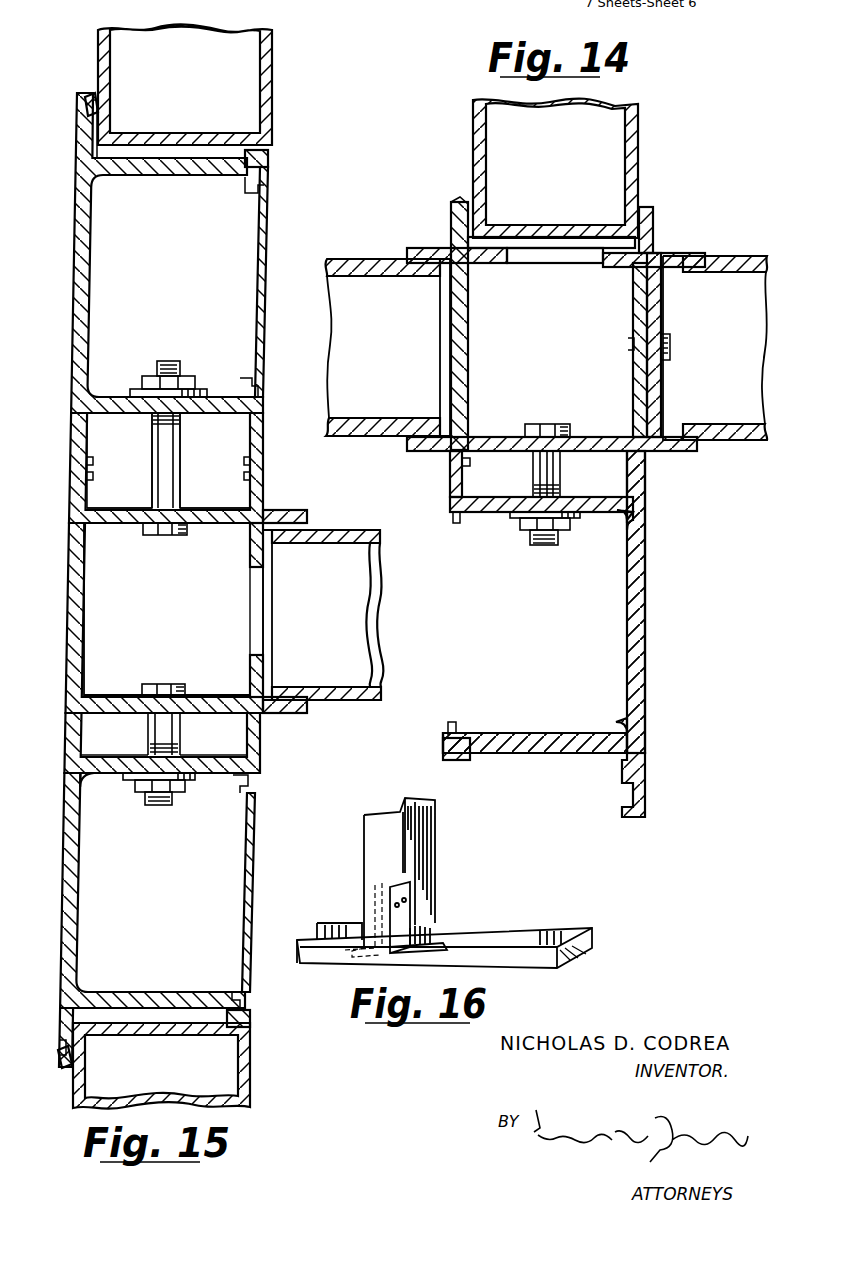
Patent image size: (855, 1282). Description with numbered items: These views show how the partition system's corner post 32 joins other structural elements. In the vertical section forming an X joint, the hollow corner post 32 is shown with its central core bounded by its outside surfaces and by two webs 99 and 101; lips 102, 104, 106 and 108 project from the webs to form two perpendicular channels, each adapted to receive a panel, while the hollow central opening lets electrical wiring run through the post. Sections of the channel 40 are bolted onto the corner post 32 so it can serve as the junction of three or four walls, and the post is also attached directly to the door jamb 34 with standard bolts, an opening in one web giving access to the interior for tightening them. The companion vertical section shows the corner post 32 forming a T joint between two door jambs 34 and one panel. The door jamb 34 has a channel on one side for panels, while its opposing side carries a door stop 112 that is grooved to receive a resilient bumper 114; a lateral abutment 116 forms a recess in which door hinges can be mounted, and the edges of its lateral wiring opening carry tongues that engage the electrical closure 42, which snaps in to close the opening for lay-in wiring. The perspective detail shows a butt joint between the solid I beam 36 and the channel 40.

In FIG. 15, the corner post 32 is at (68, 600).
In FIG. 14, the corner post 32 is at (620, 456).
In FIG. 15, the door jamb 34 is at (75, 292).
In FIG. 14, the door jamb 34 is at (647, 612).
In FIG. 16, the solid I beam 36 is at (428, 836).
In FIG. 14, the channel 40 is at (686, 253).
In FIG. 16, the channel 40 is at (548, 925).
In FIG. 15, the electrical closure 42 is at (270, 222).
In FIG. 15, the web 99 is at (103, 523).
In FIG. 14, the web 99 is at (469, 350).
In FIG. 15, the web 101 is at (248, 560).
In FIG. 14, the web 101 is at (626, 266).
In FIG. 15, the lip 102 is at (282, 512).
In FIG. 14, the lip 102 is at (452, 204).
In FIG. 15, the lip 104 is at (272, 713).
In FIG. 14, the lip 104 is at (653, 215).
In FIG. 15, the lip 106 is at (87, 486).
In FIG. 14, the lip 106 is at (445, 248).
In FIG. 15, the lip 108 is at (250, 486).
In FIG. 15, the door stop 112 is at (77, 146).
In FIG. 14, the door stop 112 is at (646, 782).
In FIG. 15, the resilient bumper 114 is at (96, 100).
In FIG. 15, the lateral abutment 116 is at (270, 158).
In FIG. 14, the lateral abutment 116 is at (460, 762).